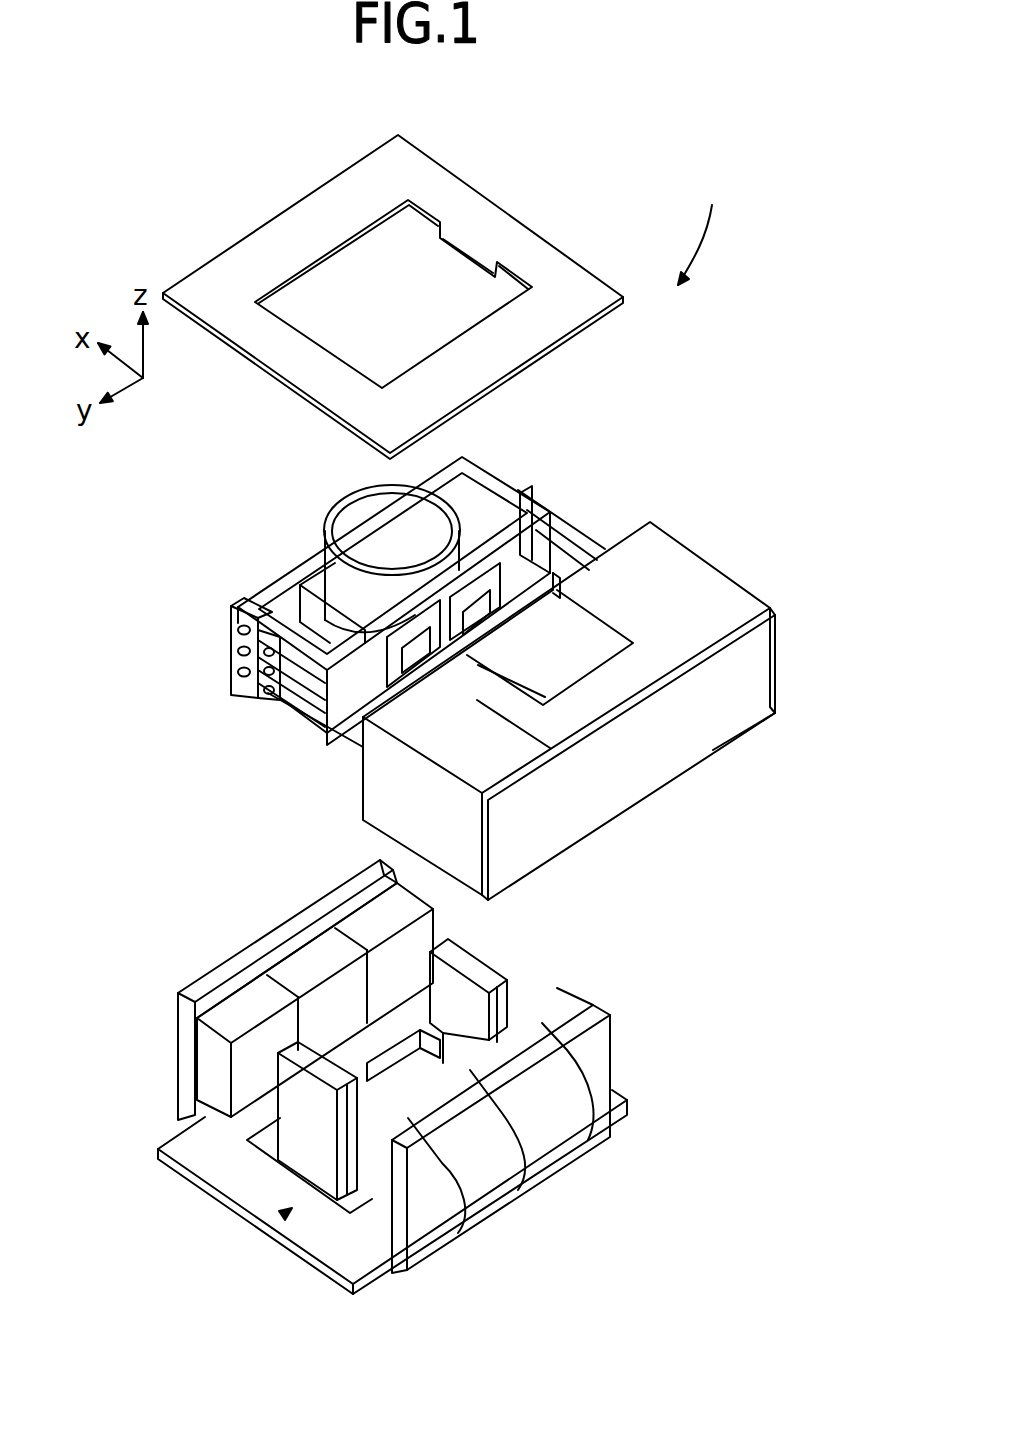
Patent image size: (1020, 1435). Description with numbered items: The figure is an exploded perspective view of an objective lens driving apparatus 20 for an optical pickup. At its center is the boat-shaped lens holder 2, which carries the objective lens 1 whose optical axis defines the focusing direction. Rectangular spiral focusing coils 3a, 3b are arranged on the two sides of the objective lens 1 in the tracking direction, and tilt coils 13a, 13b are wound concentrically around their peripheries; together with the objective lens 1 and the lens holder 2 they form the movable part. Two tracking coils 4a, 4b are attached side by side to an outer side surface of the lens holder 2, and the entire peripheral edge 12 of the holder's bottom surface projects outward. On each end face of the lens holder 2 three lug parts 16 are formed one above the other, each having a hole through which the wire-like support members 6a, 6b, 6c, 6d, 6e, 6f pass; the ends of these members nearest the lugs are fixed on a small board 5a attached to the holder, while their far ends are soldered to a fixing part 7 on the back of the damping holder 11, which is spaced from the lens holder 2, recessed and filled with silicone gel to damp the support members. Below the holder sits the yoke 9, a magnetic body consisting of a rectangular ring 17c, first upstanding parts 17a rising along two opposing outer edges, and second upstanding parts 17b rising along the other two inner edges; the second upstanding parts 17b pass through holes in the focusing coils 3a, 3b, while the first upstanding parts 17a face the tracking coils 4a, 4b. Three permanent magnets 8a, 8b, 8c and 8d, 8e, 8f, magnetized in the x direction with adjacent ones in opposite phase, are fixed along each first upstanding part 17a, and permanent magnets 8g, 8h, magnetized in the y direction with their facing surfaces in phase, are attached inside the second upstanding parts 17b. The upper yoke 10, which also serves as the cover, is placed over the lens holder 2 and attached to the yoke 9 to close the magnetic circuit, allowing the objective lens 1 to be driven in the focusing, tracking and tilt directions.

The upper yoke 10 is at (268, 232).
The objective lens driving apparatus 20 is at (710, 219).
The objective lens 1 is at (254, 556).
The lens holder 2 is at (392, 533).
The small board 5a is at (240, 617).
The support member 6a is at (232, 615).
The support member 6b is at (233, 652).
The support member 6c is at (240, 690).
The support member 6d is at (557, 528).
The support member 6e is at (570, 550).
The support member 6f is at (575, 566).
The lug part 16 is at (232, 667).
The tilt coil 13a is at (300, 690).
The tilt coil 13b is at (523, 560).
The focusing coil 3a is at (330, 700).
The focusing coil 3b is at (553, 513).
The peripheral edge 12 is at (330, 712).
The fixing part 7 is at (628, 767).
The tracking coil 4a is at (530, 740).
The tracking coil 4b is at (647, 690).
The damping holder 11 is at (713, 580).
The permanent magnet 8a is at (458, 1233).
The permanent magnet 8b is at (518, 1190).
The permanent magnet 8c is at (588, 1140).
The permanent magnet 8d is at (178, 993).
The permanent magnet 8e is at (303, 960).
The permanent magnet 8f is at (377, 915).
The permanent magnet 8g is at (198, 1158).
The permanent magnet 8h is at (456, 956).
The yoke 9 is at (292, 1208).
The first upstanding part 17a is at (178, 1043).
The second upstanding part 17b is at (497, 967).
The rectangular ring 17c is at (195, 1152).